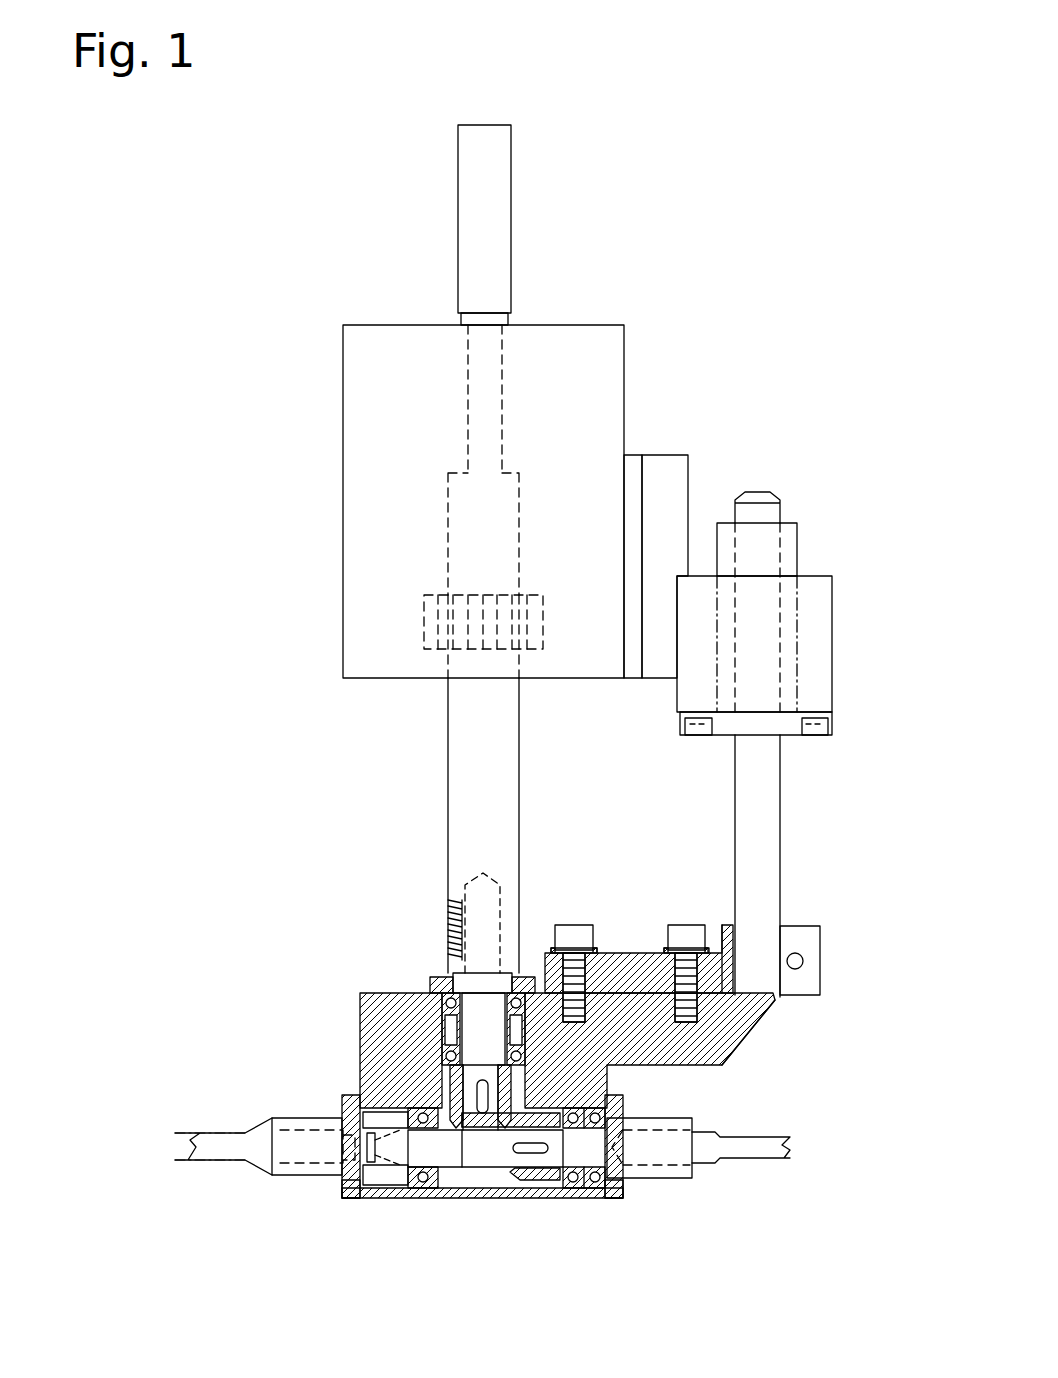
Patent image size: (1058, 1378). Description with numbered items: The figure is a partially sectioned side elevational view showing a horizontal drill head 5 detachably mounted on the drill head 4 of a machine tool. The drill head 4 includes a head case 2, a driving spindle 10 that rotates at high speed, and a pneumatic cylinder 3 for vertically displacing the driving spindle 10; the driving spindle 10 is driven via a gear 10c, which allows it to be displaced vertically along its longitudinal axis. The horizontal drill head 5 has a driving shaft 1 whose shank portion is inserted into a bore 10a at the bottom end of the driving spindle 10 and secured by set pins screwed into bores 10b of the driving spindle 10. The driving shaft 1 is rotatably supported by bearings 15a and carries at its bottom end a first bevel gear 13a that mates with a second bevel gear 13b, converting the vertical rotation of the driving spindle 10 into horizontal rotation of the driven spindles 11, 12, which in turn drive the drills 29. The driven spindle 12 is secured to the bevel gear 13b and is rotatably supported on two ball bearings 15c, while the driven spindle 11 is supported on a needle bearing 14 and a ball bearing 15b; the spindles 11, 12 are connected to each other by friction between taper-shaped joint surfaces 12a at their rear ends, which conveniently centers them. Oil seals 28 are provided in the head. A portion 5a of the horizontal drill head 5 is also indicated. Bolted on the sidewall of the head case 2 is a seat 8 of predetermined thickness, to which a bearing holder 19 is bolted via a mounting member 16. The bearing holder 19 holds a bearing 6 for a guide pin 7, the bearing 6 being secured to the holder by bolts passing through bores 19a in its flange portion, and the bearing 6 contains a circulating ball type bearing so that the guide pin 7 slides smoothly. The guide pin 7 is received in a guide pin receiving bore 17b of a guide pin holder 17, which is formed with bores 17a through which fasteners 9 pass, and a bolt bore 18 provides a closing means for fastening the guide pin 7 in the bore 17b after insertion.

The driving shaft 1 is at (465, 1003).
The head case 2 is at (597, 340).
The pneumatic cylinder 3 is at (490, 215).
The drill head 4 is at (341, 448).
The horizontal drill head 5 is at (356, 995).
The housing extension 5a is at (745, 1035).
The bearing 6 is at (790, 547).
The guide pin 7 is at (768, 835).
The seat 8 is at (633, 452).
The fasteners 9 is at (674, 953).
The driving spindle 10 is at (448, 831).
The bore 10a is at (470, 940).
The bores 10b is at (448, 905).
The gear 10c is at (437, 620).
The driven spindle 11 is at (285, 1180).
The driven spindle 12 is at (665, 1178).
The taper-shaped joint surfaces 12a is at (400, 1195).
The first bevel gear 13a is at (425, 1110).
The second bevel gear 13b is at (543, 1192).
The needle bearing 14 is at (410, 1190).
The bearings 15a is at (445, 1028).
The ball bearing 15b is at (462, 1192).
The ball bearings 15c is at (613, 1205).
The mounting member 16 is at (663, 452).
The guide pin holder 17 is at (815, 935).
The bores 17a is at (577, 958).
The guide pin receiving bore 17b is at (764, 940).
The bolt bore 18 is at (801, 965).
The bearing holder 19 is at (818, 600).
The bores 19a is at (703, 737).
The oil seals 28 is at (440, 977).
The drills 29 is at (225, 1160).